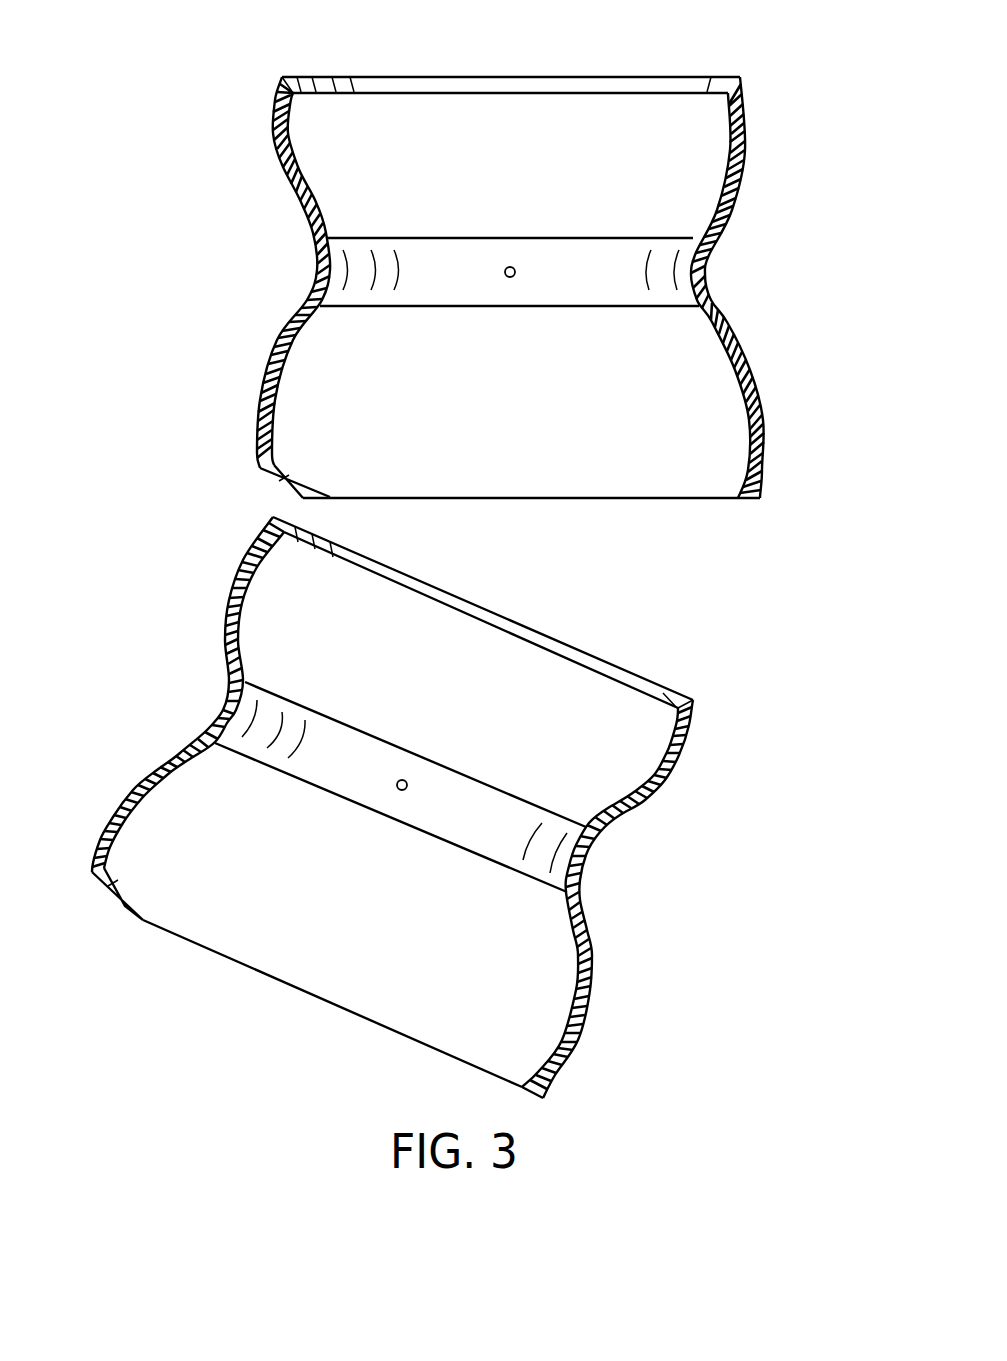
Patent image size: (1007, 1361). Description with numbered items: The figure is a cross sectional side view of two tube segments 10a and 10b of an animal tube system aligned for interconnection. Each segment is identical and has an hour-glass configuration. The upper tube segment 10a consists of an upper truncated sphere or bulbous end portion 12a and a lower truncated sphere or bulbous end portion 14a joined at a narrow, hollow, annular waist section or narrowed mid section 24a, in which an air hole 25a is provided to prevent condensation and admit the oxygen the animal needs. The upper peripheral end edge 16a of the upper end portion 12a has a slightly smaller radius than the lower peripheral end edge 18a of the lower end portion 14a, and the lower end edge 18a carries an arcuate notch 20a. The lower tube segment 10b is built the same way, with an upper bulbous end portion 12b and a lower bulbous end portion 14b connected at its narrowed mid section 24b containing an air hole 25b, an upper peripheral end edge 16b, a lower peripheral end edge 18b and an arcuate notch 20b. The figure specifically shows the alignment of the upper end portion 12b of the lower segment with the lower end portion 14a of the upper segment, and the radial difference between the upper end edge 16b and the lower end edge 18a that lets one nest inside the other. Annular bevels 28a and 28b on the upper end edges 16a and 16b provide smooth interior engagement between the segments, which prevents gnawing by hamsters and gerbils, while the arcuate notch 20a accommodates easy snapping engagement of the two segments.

The tube segment 10a is at (805, 190).
The upper truncated sphere or bulbous end portion 12a is at (748, 145).
The lower truncated sphere or bulbous end portion 14a is at (765, 428).
The upper annular surface or peripheral end edge 16a is at (545, 77).
The lower annular surface or peripheral end edge 18a is at (658, 498).
The arcuate notch 20a is at (295, 487).
The annular intersection or narrowed mid section 24a is at (317, 272).
The air hole 25a is at (514, 266).
The annular bevel 28a is at (293, 78).
The tube segment 10b is at (705, 892).
The upper truncated sphere or bulbous end portion 12b is at (677, 760).
The lower truncated sphere or bulbous end portion 14b is at (578, 1030).
The upper annular surface or peripheral end edge 16b is at (493, 610).
The lower annular surface or peripheral end edge 18b is at (288, 988).
The arcuate notch 20b is at (115, 907).
The annular intersection or narrowed mid section 24b is at (227, 703).
The air hole 25b is at (406, 780).
The annular bevel 28b is at (682, 693).